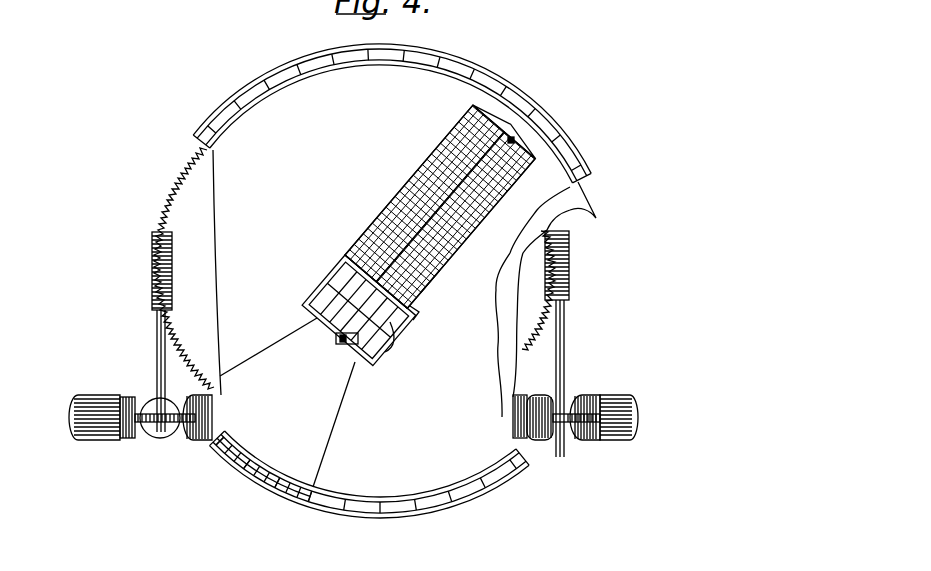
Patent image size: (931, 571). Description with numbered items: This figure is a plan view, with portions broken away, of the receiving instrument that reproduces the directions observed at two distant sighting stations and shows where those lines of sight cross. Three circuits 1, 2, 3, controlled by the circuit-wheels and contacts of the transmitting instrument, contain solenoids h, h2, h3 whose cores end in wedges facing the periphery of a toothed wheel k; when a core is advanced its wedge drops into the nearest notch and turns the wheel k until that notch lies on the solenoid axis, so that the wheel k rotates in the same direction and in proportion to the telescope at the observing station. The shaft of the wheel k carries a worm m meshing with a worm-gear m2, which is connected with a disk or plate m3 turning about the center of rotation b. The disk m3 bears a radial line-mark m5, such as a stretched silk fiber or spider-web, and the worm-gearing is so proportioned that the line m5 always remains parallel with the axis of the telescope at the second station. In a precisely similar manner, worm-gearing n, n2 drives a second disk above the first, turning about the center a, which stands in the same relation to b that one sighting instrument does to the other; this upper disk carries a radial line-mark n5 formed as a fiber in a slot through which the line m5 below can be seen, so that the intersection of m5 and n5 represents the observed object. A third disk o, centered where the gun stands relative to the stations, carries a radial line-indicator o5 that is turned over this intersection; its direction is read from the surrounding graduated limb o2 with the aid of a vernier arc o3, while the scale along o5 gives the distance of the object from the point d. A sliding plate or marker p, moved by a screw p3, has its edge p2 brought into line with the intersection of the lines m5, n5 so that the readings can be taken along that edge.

The third disk o is at (392, 281).
The graduated limb o2 is at (428, 503).
The vernier arc o3 is at (328, 430).
The radial line-indicator o5 is at (430, 215).
The radial line-mark n5 is at (406, 198).
The radial line-mark m5 is at (462, 238).
The center of rotation of disk n3 a is at (341, 262).
The center of rotation of disk m3 b is at (430, 282).
The point on the instrument d is at (390, 322).
The sliding plate or marker p is at (312, 294).
The edge of the indicator-plate p2 is at (418, 311).
The screw p3 is at (514, 145).
The worm n is at (156, 300).
The worm-gear n2 is at (152, 433).
The worm m is at (568, 274).
The worm-gear m2 is at (524, 335).
The disk or plate m3 is at (574, 211).
The solenoid h is at (516, 397).
The solenoid h2 is at (538, 397).
The solenoid h3 is at (603, 395).
The toothed wheel k is at (575, 441).
The circuit 1 is at (634, 441).
The circuit 2 is at (527, 441).
The circuit 3 is at (520, 441).